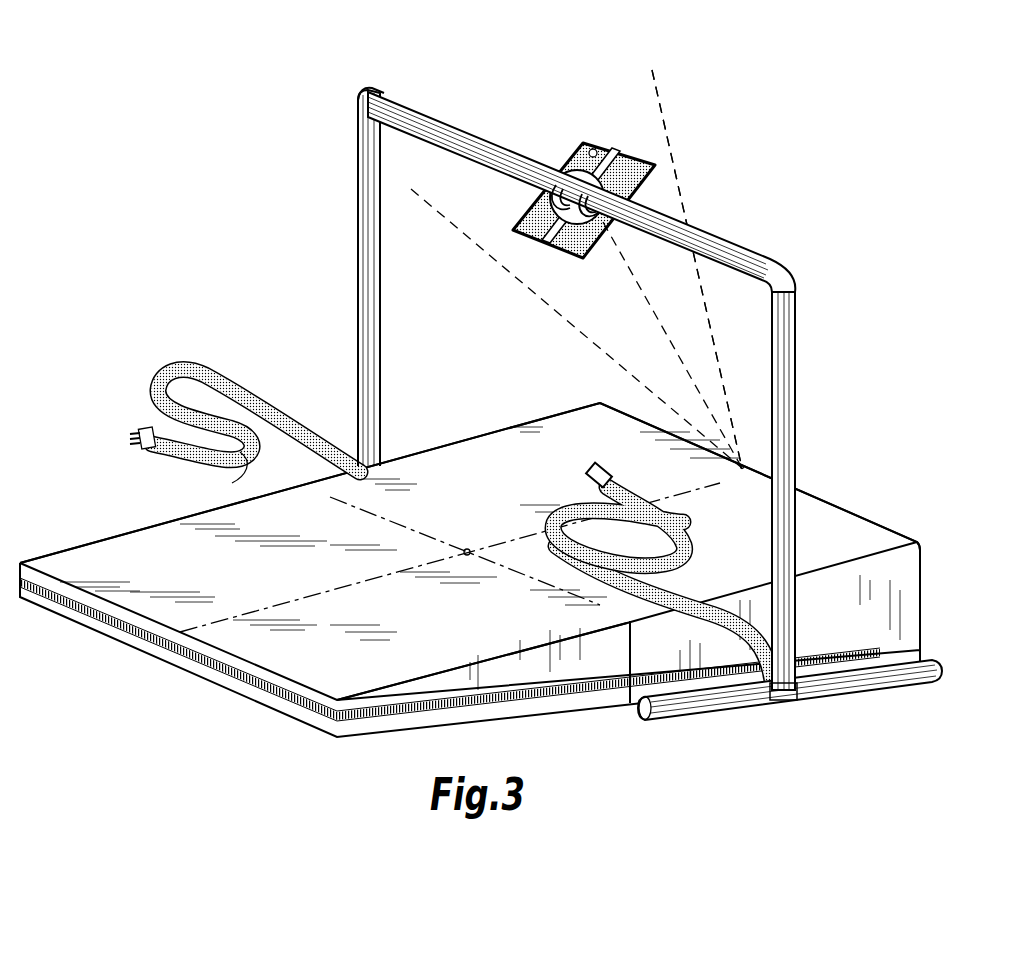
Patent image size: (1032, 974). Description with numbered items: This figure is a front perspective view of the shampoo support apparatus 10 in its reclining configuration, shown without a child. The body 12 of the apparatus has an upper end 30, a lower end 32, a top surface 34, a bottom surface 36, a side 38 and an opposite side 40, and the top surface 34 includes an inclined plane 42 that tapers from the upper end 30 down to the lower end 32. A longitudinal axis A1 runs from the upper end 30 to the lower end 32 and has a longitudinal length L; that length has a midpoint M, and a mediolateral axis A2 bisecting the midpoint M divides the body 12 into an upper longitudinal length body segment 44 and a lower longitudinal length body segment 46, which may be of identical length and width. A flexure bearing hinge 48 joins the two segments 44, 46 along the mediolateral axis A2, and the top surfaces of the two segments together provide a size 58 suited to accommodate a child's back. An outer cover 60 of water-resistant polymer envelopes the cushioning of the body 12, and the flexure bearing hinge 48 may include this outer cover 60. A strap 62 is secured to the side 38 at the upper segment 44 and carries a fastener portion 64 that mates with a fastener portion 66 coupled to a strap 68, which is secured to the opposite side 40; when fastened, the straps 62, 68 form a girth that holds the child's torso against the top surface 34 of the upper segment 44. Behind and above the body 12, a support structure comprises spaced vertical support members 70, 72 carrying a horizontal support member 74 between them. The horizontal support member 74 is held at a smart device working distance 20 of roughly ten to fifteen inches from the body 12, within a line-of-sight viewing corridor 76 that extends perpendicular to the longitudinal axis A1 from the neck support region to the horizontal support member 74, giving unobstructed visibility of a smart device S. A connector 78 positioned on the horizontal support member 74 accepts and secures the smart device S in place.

The shampoo support apparatus 10 is at (258, 186).
The body 12 is at (445, 448).
The smart device working distance 20 is at (677, 357).
The upper end 30 is at (832, 502).
The lower end 32 is at (85, 593).
The top surface 34 is at (325, 483).
The bottom surface 36 is at (388, 733).
The side 38 is at (773, 607).
The side 40 is at (510, 422).
The inclined plane 42 is at (488, 653).
The upper longitudinal length body segment 44 is at (662, 495).
The lower longitudinal length body segment 46 is at (265, 606).
The flexure bearing hinge 48 is at (613, 618).
The size 58 is at (342, 592).
The outer cover 60 is at (98, 538).
The strap 62 is at (720, 617).
The fastener portion 64 is at (597, 468).
The fastener portion 66 is at (132, 433).
The strap 68 is at (183, 356).
The vertical support member 70 is at (790, 370).
The vertical support member 72 is at (358, 233).
The horizontal support member 74 is at (713, 237).
The line-of-sight viewing corridor 76 is at (693, 314).
The connector 78 is at (580, 150).
The smart device S is at (660, 165).
The midpoint M is at (468, 548).
The longitudinal length L is at (718, 484).
The longitudinal axis A1 is at (683, 493).
The mediolateral axis A2 is at (370, 503).